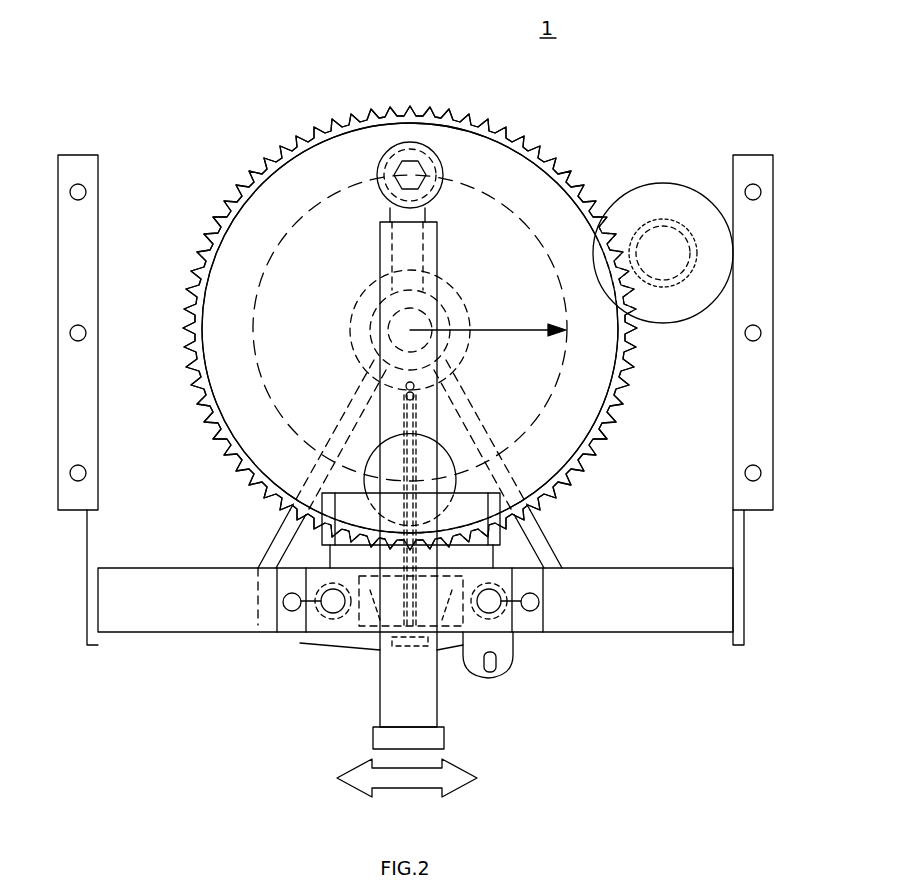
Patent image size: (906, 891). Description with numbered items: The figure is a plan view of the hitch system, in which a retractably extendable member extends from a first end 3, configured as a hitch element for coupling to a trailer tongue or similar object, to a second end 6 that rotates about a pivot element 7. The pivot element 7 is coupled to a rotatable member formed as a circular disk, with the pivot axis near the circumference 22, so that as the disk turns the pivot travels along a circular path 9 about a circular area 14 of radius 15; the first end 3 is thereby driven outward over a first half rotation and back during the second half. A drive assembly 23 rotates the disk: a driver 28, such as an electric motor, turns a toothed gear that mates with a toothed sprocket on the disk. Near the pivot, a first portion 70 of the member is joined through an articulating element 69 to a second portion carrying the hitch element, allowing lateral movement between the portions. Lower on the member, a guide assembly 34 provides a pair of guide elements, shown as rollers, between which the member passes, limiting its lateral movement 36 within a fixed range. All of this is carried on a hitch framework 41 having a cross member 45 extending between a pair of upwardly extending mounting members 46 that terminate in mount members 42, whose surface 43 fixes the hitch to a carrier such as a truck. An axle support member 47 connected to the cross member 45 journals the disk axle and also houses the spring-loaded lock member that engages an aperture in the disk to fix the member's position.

The first end 3 is at (444, 746).
The second end 6 is at (440, 172).
The pivot element 7 is at (414, 160).
The circular path 9 is at (512, 210).
The circular area 14 is at (522, 280).
The radius 15 is at (508, 326).
The circumference 22 is at (618, 400).
The drive assembly 23 is at (685, 162).
The driver 28 is at (718, 273).
The guide assembly 34 is at (498, 632).
The lateral movement 36 is at (407, 778).
The hitch framework 41 is at (748, 548).
The mount members 42 is at (58, 385).
The surface 43 is at (66, 250).
The cross member 45 is at (686, 565).
The mounting members 46 is at (88, 532).
The axle support member 47 is at (370, 290).
The articulating element 69 is at (374, 472).
The first portion 70 is at (372, 370).